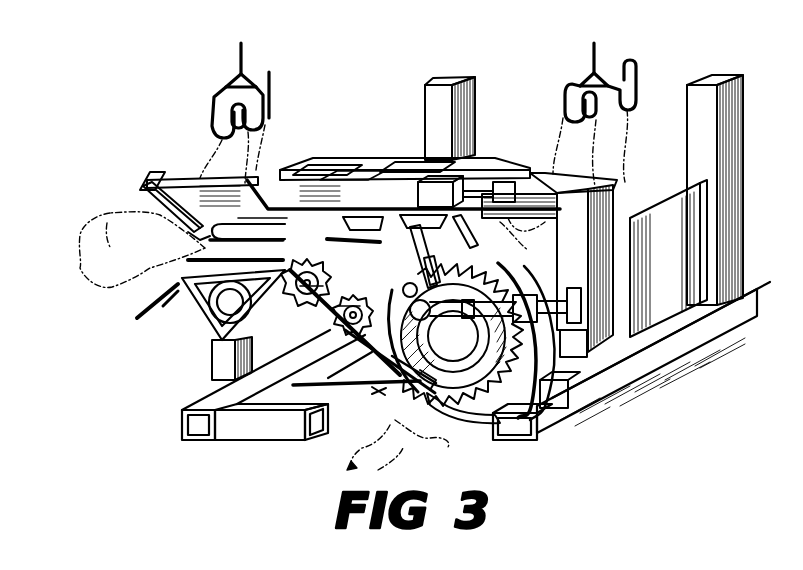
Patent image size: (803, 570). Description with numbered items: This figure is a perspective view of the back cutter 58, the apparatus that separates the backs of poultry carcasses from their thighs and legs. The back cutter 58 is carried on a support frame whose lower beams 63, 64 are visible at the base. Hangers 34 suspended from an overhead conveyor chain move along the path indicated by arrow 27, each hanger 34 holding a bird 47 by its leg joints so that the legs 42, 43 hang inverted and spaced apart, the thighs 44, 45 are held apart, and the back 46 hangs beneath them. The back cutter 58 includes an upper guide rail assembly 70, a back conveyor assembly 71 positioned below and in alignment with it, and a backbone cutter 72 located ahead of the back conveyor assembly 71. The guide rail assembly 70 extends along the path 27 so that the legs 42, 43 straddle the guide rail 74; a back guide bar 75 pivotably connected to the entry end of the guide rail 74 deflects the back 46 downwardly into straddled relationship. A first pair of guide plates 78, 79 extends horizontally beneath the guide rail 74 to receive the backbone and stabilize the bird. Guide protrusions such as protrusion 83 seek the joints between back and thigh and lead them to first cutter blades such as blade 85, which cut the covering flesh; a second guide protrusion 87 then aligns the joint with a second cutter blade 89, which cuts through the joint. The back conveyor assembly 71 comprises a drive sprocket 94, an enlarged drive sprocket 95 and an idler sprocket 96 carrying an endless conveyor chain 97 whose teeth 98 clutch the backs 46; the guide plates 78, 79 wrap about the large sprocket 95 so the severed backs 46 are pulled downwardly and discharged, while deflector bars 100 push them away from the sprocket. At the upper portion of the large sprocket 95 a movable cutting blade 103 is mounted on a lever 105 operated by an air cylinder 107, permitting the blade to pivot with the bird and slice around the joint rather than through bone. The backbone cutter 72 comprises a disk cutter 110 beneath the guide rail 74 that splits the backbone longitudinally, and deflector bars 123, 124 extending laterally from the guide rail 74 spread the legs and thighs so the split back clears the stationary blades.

The arrow 27 is at (386, 52).
The hanger 34 is at (229, 53).
The leg 42 is at (258, 162).
The leg 43 is at (206, 142).
The thigh 44 is at (632, 168).
The thigh 45 is at (522, 222).
The back 46 is at (113, 283).
The bird 47 is at (101, 210).
The back cutter 58 is at (636, 411).
The lower beam 63 is at (562, 420).
The lower beam 64 is at (240, 444).
The upper guide rail assembly 70 is at (338, 110).
The back conveyor assembly 71 is at (298, 340).
The backbone cutter 72 is at (186, 332).
The guide rail 74 is at (192, 178).
The back guide bar 75 is at (143, 196).
The guide plate 78 is at (462, 432).
The guide plate 79 is at (247, 246).
The guide protrusion 83 is at (317, 229).
The first cutter blade 85 is at (370, 240).
The second guide protrusion 87 is at (466, 191).
The second cutter blade 89 is at (475, 238).
The drive sprocket 94 is at (305, 310).
The enlarged drive sprocket 95 is at (420, 386).
The idler sprocket 96 is at (348, 298).
The conveyor chain 97 is at (375, 382).
The teeth 98 is at (378, 392).
The deflector bar 100 is at (305, 412).
The movable cutting blade 103 is at (411, 245).
The lever 105 is at (440, 297).
The air operated cylinder 107 is at (470, 334).
The disk cutter 110 is at (201, 343).
The deflector bar 123 is at (313, 158).
The deflector bar 124 is at (357, 188).